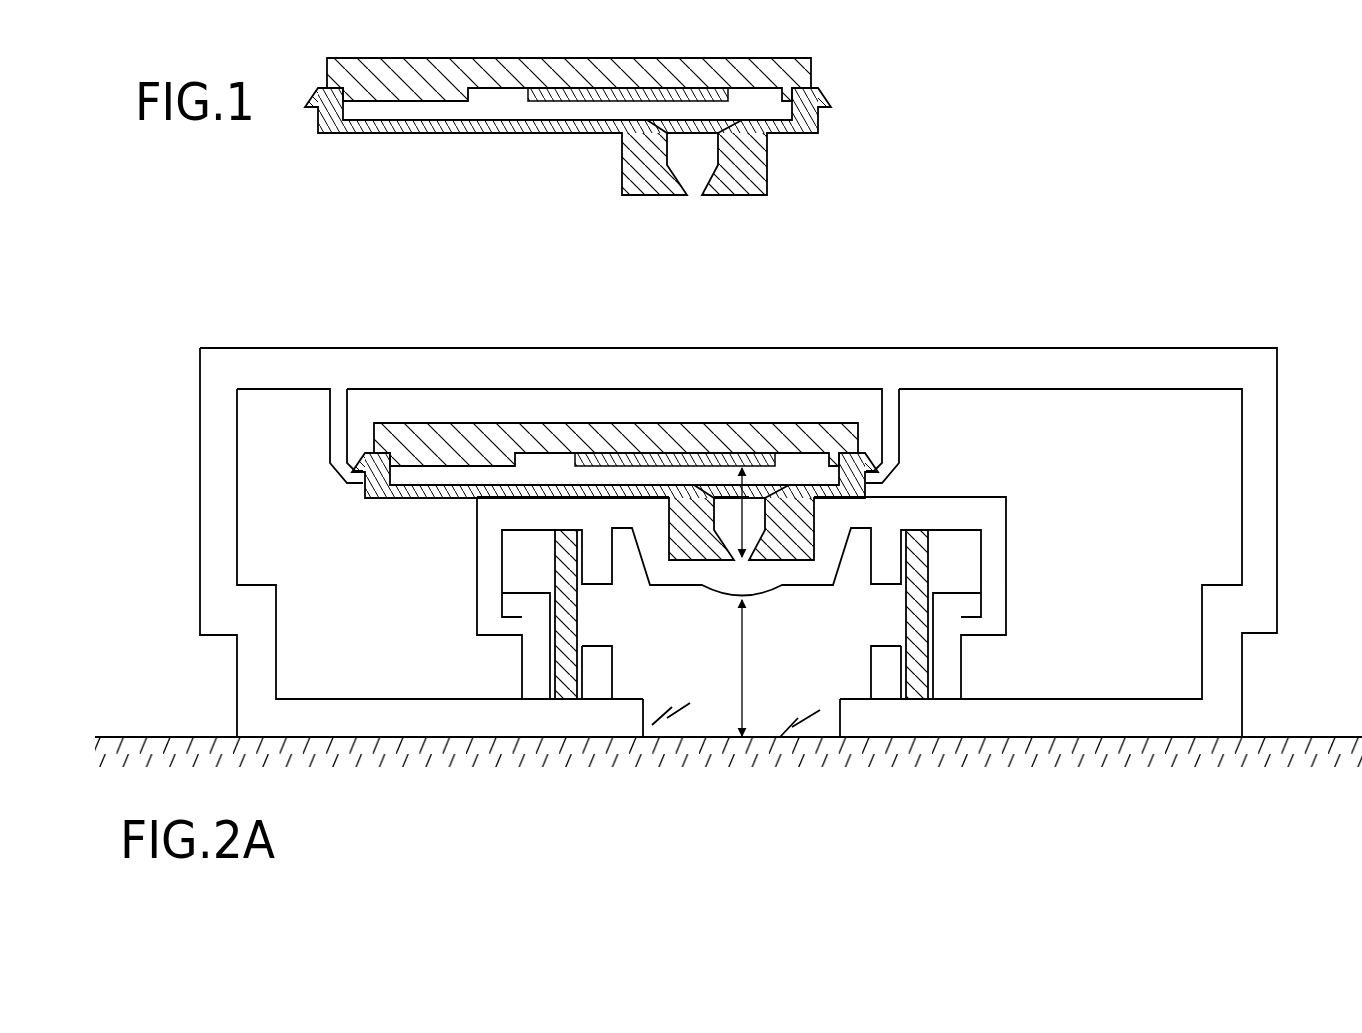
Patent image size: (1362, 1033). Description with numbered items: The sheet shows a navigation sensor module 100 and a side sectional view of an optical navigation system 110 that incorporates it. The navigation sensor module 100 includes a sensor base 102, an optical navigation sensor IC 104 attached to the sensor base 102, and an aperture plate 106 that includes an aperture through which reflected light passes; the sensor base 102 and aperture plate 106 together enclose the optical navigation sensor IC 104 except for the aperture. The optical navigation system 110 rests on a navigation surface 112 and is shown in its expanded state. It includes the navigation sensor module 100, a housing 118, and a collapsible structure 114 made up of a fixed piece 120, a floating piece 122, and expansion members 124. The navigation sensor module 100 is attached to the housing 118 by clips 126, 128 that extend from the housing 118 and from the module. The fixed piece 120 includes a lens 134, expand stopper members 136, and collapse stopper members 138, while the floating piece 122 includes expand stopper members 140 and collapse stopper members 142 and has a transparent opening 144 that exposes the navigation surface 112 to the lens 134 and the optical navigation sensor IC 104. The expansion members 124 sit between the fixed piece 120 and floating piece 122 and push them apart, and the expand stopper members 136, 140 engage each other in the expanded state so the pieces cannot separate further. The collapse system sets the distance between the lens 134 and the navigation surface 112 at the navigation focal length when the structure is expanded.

In FIG. 1, the navigation sensor module 100 is at (671, 101).
In FIG. 2A, the navigation sensor module 100 is at (590, 425).
In FIG. 1, the sensor base 102 is at (812, 63).
In FIG. 2A, the sensor base 102 is at (634, 422).
In FIG. 1, the optical navigation sensor IC 104 is at (527, 96).
In FIG. 2A, the optical navigation sensor IC 104 is at (540, 456).
In FIG. 1, the aperture plate 106 is at (768, 165).
In FIG. 2A, the aperture plate 106 is at (378, 499).
In FIG. 2A, the optical navigation system 110 is at (728, 520).
In FIG. 2A, the navigation surface 112 is at (178, 732).
In FIG. 2A, the collapsible structure 114 is at (1043, 538).
In FIG. 2A, the housing 118 is at (1278, 433).
In FIG. 2A, the fixed piece 120 is at (477, 538).
In FIG. 2A, the floating piece 122 is at (322, 698).
In FIG. 2A, the expansion member 124 is at (597, 620).
In FIG. 2A, the clip 126 is at (348, 465).
In FIG. 2A, the clip 128 is at (365, 452).
In FIG. 2A, the lens 134 is at (758, 597).
In FIG. 2A, the expand stopper member 136 is at (514, 626).
In FIG. 2A, the collapse stopper member 138 is at (600, 587).
In FIG. 2A, the expand stopper member 140 is at (510, 605).
In FIG. 2A, the collapse stopper member 142 is at (598, 638).
In FIG. 2A, the transparent opening 144 is at (688, 727).